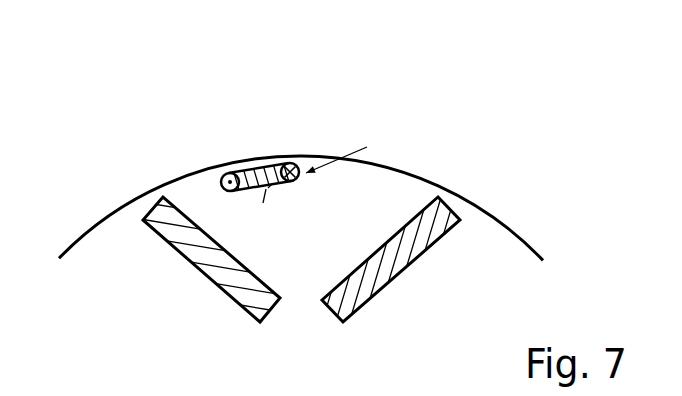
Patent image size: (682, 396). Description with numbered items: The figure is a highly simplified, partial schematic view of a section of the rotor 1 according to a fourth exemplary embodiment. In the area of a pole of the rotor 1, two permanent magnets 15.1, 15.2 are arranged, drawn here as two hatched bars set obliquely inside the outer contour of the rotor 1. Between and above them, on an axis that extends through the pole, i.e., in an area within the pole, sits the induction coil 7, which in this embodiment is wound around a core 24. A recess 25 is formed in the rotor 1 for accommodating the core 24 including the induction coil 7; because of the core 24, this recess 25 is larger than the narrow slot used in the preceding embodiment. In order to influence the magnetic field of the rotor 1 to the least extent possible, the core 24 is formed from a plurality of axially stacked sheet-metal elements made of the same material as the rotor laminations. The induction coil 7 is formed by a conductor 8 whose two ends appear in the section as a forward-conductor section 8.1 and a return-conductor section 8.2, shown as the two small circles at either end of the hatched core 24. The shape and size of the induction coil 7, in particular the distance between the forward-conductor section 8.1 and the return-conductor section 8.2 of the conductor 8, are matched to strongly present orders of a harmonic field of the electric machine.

The rotor 1 is at (450, 288).
The induction coil 7 is at (367, 147).
The conductor 8 is at (240, 112).
The forward-conductor section 8.1 is at (222, 176).
The return-conductor section 8.2 is at (291, 164).
The permanent magnet 15.1 is at (187, 249).
The permanent magnet 15.2 is at (403, 253).
The core 24 is at (262, 166).
The recess 25 is at (268, 188).